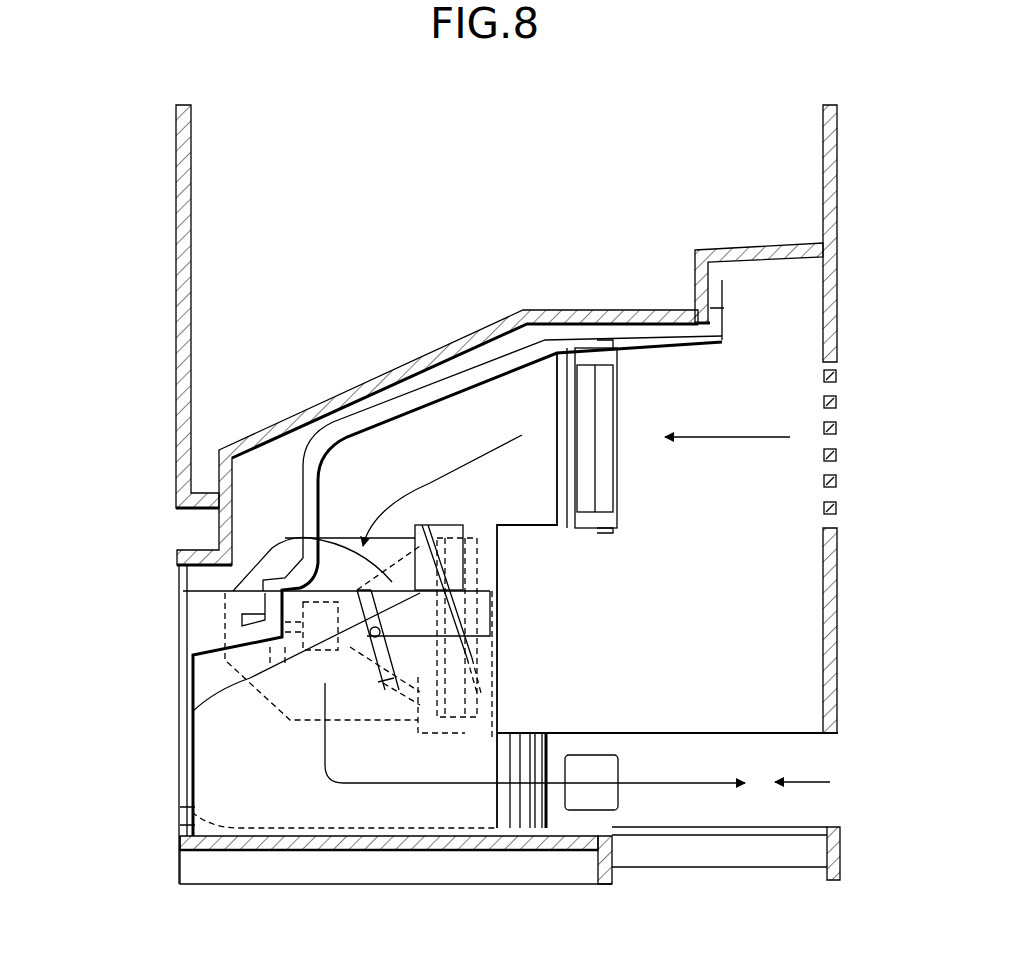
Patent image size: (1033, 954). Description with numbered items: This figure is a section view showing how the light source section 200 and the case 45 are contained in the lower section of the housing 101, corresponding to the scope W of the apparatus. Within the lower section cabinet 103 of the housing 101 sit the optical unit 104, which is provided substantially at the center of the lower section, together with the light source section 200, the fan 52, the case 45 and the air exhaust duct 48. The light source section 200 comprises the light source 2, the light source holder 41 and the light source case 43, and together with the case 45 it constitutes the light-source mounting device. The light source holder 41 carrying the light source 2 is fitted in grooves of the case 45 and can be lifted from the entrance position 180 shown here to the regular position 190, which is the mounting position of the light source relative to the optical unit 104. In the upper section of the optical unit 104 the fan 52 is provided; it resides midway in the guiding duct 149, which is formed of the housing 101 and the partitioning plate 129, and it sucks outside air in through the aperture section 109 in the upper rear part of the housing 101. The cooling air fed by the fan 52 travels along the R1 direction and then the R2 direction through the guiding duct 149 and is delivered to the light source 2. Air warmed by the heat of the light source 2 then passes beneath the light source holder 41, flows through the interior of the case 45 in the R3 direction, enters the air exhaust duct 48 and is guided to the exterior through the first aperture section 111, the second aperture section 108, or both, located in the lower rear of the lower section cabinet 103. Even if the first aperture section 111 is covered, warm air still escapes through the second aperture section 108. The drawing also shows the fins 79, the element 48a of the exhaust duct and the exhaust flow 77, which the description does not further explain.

The housing 101 is at (830, 172).
The aperture section 109 is at (838, 420).
The partitioning plate 129 is at (517, 350).
The guiding duct 149 is at (428, 453).
The light source section 200 is at (348, 503).
The scope W is at (128, 400).
The light source case 43 is at (218, 541).
The light source 2 is at (278, 572).
The light source holder 41 is at (470, 560).
The fan 52 is at (605, 490).
The optical unit 104 is at (638, 582).
The regular position 190 is at (756, 642).
The first aperture section 111 is at (828, 740).
The fins 79 is at (520, 731).
The element of 48 48a is at (598, 755).
The air exhaust duct 48 is at (712, 745).
The air flow 77 is at (790, 780).
The entrance position 180 is at (172, 782).
The case 45 is at (247, 860).
The lower section cabinet 103 is at (552, 852).
The second aperture section 108 is at (775, 860).
The R1 direction R1 is at (736, 437).
The R2 direction R2 is at (472, 458).
The R3 direction R3 is at (325, 745).